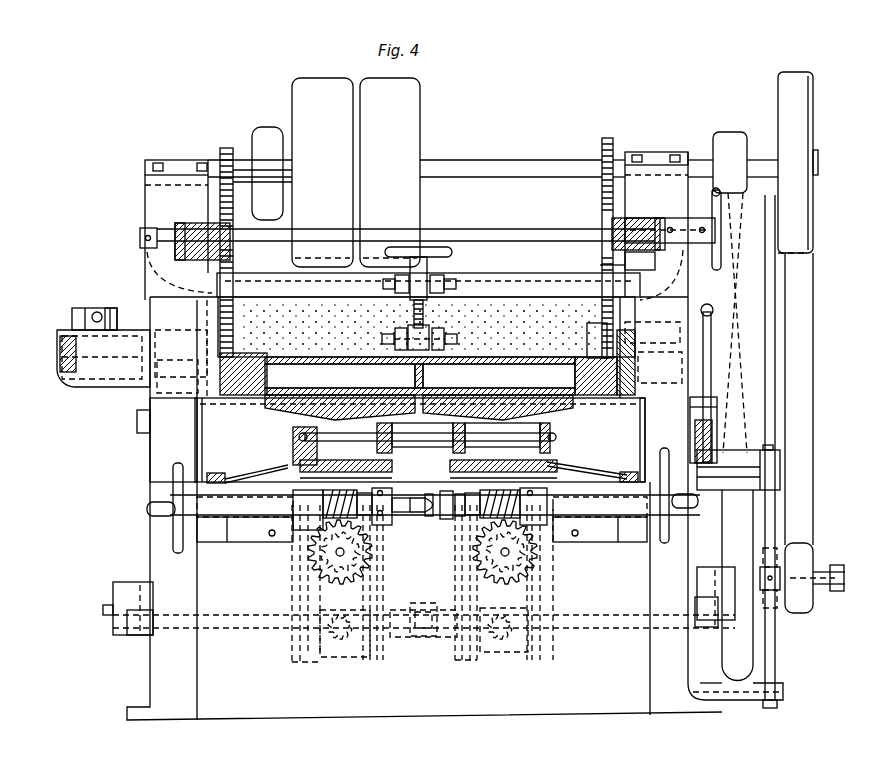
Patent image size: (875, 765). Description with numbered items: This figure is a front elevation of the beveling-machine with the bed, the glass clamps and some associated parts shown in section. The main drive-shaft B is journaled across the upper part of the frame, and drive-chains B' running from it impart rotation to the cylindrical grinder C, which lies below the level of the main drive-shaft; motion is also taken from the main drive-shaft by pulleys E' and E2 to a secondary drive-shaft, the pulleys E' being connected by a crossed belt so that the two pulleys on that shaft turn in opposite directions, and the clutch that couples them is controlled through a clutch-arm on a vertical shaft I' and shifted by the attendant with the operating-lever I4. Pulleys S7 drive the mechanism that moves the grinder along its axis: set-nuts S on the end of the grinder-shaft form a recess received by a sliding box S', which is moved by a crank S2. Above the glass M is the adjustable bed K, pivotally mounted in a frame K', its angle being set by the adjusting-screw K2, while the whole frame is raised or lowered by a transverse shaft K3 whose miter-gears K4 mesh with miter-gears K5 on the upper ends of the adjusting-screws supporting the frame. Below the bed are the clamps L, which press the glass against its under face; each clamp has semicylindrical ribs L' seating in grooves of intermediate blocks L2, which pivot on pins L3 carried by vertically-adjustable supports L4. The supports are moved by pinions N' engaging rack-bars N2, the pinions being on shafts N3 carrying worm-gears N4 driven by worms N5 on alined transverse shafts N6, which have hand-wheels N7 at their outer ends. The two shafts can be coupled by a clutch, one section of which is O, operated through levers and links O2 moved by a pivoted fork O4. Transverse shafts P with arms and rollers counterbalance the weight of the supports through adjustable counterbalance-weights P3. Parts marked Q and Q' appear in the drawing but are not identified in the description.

The pulleys S7 is at (265, 128).
The main drive-shaft B is at (493, 157).
The drive-chains B' is at (428, 248).
The miter-gears K4 is at (160, 215).
The miter-gears K5 is at (192, 244).
The transverse shaft K3 is at (535, 242).
The pulleys E' is at (726, 387).
The pulleys E2 is at (810, 126).
The vertical shaft I' is at (779, 451).
The operating-lever I4 is at (702, 360).
The intermediate blocks L2 is at (420, 430).
The pins or shafts L3 is at (550, 437).
The vertically-adjustable supports L4 is at (393, 462).
The clamps L is at (420, 440).
The set-nuts S is at (86, 366).
The crank S2 is at (97, 311).
The sliding box S' is at (121, 318).
The frame K' is at (426, 327).
The grinder C is at (420, 328).
The adjusting-screw K2 is at (430, 320).
The adjustable bed K is at (427, 362).
The semicylindrical ribs L' is at (420, 388).
The glass M is at (340, 396).
The rod Q' is at (422, 464).
The plate Q is at (650, 440).
The clutch section O is at (195, 438).
The hand-wheels N7 is at (172, 486).
The transverse shafts N6 is at (422, 519).
The worms N5 is at (420, 498).
The levers and links O2 is at (428, 499).
The fork O4 is at (447, 518).
The parallel shafts N3 is at (348, 556).
The worm-gears N4 is at (362, 548).
The pinions N' is at (431, 577).
The rack-bars N2 is at (340, 590).
The counterbalance-weights P3 is at (122, 582).
The transverse shafts P is at (245, 620).